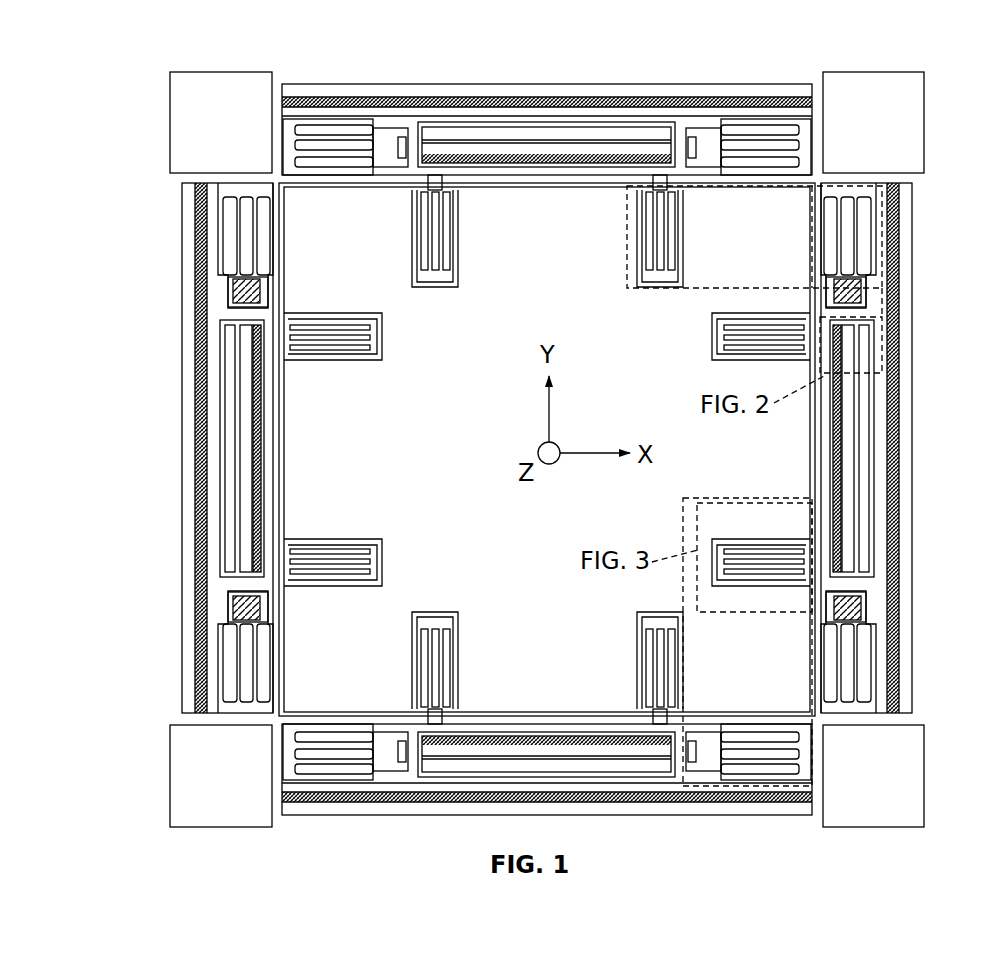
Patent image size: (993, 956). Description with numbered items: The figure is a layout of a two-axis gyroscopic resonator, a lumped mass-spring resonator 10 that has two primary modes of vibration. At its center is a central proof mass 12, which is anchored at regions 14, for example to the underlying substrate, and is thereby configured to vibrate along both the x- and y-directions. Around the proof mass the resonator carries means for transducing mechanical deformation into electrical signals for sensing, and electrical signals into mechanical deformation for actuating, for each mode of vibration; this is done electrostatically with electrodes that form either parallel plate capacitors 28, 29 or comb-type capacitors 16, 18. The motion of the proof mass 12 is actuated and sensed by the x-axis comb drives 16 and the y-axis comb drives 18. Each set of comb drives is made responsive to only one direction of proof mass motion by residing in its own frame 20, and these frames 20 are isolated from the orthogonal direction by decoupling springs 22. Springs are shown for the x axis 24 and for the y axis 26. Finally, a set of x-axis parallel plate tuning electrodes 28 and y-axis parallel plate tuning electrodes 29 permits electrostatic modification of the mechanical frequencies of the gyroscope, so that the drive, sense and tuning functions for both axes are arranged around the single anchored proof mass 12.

The lumped mass-spring resonator 10 is at (153, 56).
The central proof mass 12 is at (478, 225).
The anchor regions 14 is at (240, 292).
The x-axis comb drives 16 is at (203, 405).
The y-axis comb drives 18 is at (418, 836).
The frames 20 is at (707, 120).
The decoupling springs 22 is at (612, 212).
The x-axis springs 24 is at (626, 258).
The y-axis springs 26 is at (778, 497).
The x-axis parallel plate tuning electrodes 28 is at (231, 503).
The y-axis parallel plate tuning electrodes 29 is at (636, 132).